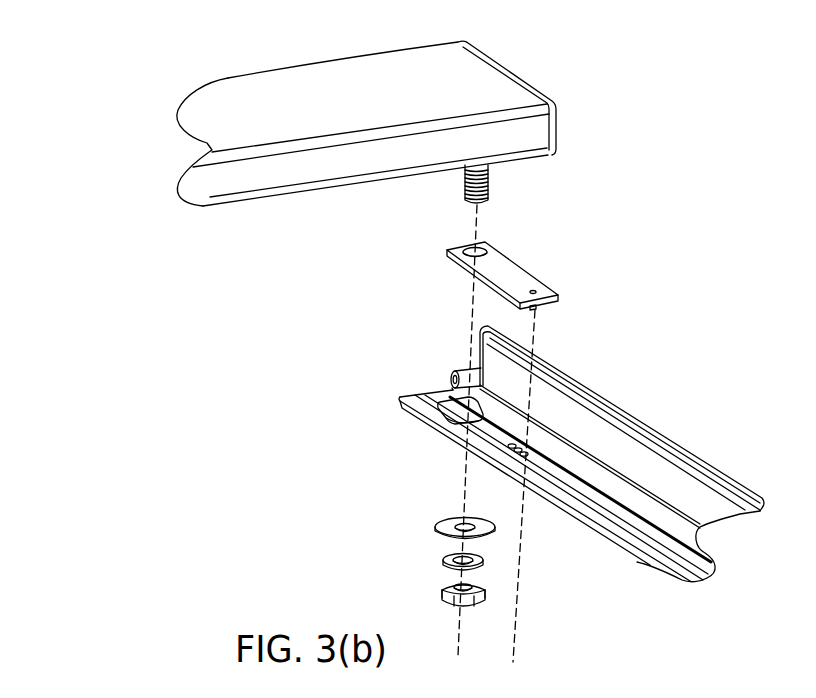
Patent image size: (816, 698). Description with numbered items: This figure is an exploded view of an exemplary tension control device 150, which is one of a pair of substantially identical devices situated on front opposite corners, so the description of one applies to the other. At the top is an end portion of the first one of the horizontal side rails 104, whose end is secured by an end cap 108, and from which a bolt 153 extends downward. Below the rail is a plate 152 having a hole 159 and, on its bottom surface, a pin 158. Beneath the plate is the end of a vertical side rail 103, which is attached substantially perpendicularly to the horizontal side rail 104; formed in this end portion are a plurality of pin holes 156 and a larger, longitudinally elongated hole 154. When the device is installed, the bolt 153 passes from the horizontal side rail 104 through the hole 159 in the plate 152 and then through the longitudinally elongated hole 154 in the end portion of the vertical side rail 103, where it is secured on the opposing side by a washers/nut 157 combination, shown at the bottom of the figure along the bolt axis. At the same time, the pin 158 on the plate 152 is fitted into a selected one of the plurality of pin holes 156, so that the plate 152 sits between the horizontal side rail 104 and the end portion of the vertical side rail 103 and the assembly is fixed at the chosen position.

The tension control device 150 is at (162, 408).
The horizontal side rail 104 is at (399, 103).
The end cap 108 is at (548, 93).
The bolt 153 is at (489, 182).
The plate 152 is at (519, 274).
The hole 159 is at (493, 252).
The pin 158 is at (538, 309).
The vertical side rail 103 is at (552, 495).
The longitudinally elongated hole 154 is at (458, 410).
The pin holes 156 is at (508, 453).
The washers/nut combination 157 is at (427, 512).